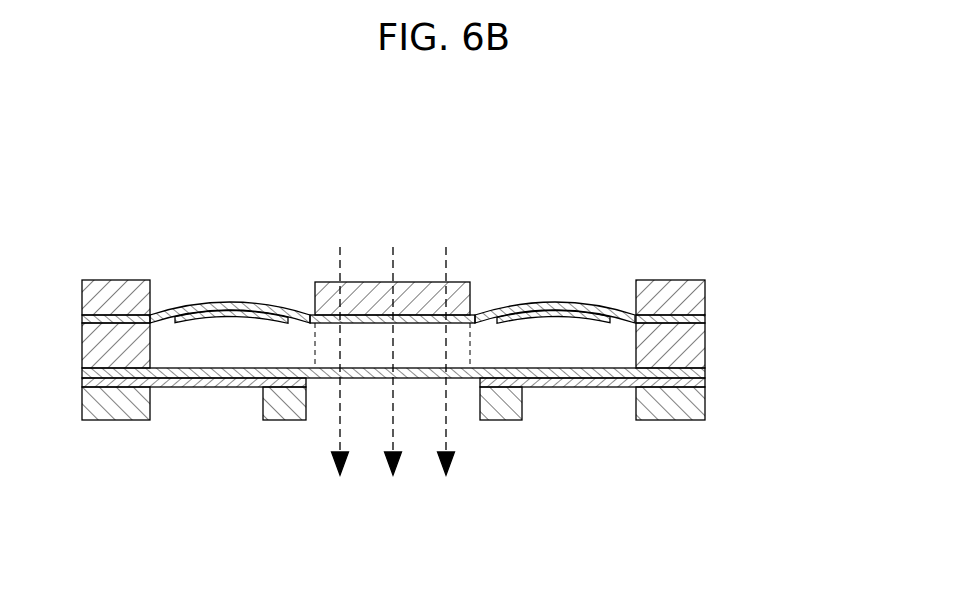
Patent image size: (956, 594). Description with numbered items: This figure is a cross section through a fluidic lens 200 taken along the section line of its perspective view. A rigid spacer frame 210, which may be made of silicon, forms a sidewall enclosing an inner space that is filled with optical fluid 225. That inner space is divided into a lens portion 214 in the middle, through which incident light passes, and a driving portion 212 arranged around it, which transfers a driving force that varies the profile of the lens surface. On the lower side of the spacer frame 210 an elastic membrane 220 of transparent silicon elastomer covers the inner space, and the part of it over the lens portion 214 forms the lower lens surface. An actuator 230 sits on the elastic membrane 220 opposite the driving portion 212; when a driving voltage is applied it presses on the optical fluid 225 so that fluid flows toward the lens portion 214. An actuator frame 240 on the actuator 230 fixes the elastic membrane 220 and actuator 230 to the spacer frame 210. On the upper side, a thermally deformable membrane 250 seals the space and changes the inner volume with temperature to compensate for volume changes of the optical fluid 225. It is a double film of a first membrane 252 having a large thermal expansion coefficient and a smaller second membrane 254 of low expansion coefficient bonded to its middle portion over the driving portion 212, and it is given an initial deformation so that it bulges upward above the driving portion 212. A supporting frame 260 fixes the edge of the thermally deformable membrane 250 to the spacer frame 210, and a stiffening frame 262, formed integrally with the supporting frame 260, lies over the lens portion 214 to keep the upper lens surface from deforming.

The fluidic lens 200 is at (617, 206).
The spacer frame 210 is at (695, 348).
The driving portion 212 is at (243, 359).
The lens portion 214 is at (388, 359).
The elastic membrane 220 is at (695, 372).
The optical fluid 225 is at (606, 353).
The actuator 230 is at (695, 382).
The actuator frame 240 is at (695, 408).
The thermally deformable membrane 250 is at (562, 203).
The first membrane 252 is at (583, 303).
The second membrane 254 is at (524, 303).
The supporting frame 260 is at (670, 292).
The stiffening frame 262 is at (322, 283).